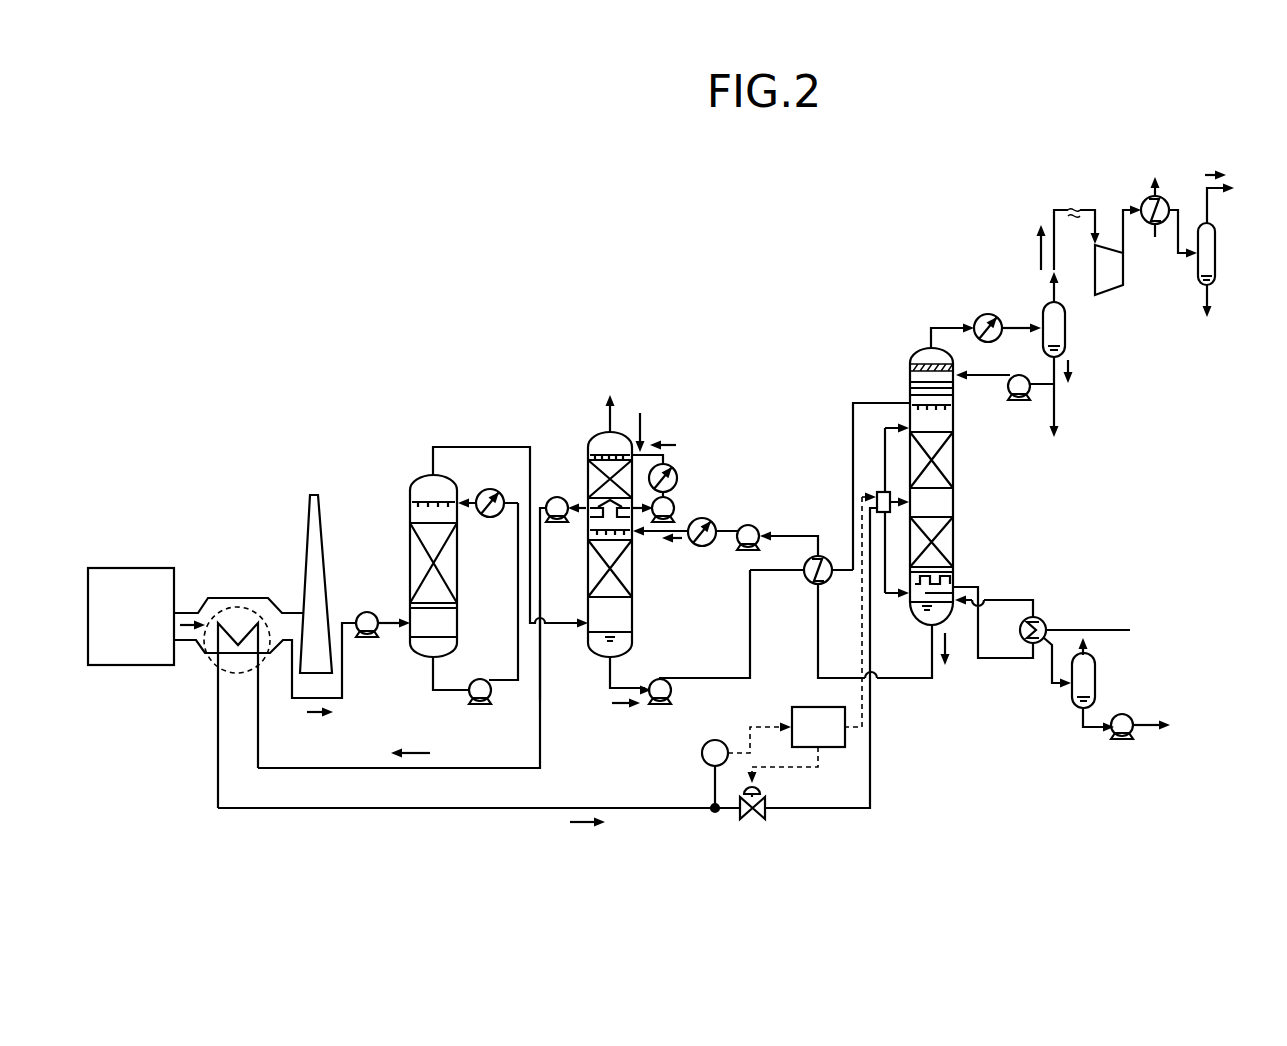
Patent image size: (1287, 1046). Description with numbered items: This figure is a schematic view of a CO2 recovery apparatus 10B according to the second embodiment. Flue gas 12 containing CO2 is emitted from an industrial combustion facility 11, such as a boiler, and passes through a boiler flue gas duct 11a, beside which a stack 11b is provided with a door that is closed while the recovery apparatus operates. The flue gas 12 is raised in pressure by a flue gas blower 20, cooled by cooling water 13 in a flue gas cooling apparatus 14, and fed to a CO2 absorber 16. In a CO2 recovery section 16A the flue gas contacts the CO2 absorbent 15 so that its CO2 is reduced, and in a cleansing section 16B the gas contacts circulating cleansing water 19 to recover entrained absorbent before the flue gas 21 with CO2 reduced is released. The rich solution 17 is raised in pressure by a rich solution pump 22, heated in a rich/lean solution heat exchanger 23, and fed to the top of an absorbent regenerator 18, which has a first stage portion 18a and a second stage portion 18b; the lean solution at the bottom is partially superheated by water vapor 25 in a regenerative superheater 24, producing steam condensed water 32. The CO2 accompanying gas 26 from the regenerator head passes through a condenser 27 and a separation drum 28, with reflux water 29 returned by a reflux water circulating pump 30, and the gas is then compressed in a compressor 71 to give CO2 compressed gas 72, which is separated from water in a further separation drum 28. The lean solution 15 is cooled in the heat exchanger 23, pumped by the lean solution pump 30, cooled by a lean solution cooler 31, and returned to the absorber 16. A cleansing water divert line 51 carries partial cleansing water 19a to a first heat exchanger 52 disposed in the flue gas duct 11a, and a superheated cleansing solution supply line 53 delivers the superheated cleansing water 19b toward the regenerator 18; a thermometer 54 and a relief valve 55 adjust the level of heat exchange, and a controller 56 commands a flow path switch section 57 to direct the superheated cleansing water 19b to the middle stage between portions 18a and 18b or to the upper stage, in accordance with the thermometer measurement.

The CO2 recovery apparatus 10B is at (652, 214).
The industrial combustion facility 11 is at (160, 568).
The boiler flue gas duct 11a is at (236, 598).
The stack 11b is at (304, 527).
The flue gas 12 is at (186, 612).
The cooling water 13 is at (488, 520).
The flue gas cooling apparatus 14 is at (410, 480).
The CO2 absorbent 15 is at (681, 537).
The CO2 absorber 16 is at (622, 424).
The CO2 recovery section 16A is at (628, 574).
The cleansing section 16B is at (592, 480).
The rich solution 17 is at (629, 708).
The absorbent regenerator 18 is at (918, 338).
The first stage portion 18a is at (948, 466).
The second stage portion 18b is at (948, 545).
The circulating cleansing water 19 is at (665, 440).
The partial cleansing water 19a is at (418, 752).
The superheated cleansing water 19b is at (583, 824).
The flue gas blower 20 is at (365, 610).
The flue gas with CO2 reduced 21 is at (606, 420).
The rich solution pump 22 is at (672, 702).
The rich/lean solution heat exchanger 23 is at (810, 583).
The regenerative superheater 24 is at (1040, 616).
The water vapor 25 is at (1104, 628).
The CO2 accompanying gas 26 is at (955, 325).
The condenser 27 is at (986, 311).
The separation drum 28 is at (1067, 330).
The reflux water 29 is at (1073, 370).
The reflux water circulating pump 30 is at (760, 522).
The lean solution cooler 31 is at (710, 546).
The steam condensed water 32 is at (1135, 715).
The cleansing water divert line 51 is at (541, 725).
The first heat exchanger 52 is at (200, 656).
The superheated cleansing solution supply line 53 is at (385, 809).
The thermometer 54 is at (722, 741).
The relief valve 55 is at (766, 790).
The controller 56 is at (800, 707).
The flow path switch section 57 is at (877, 496).
The compressor 71 is at (1117, 288).
The CO2 compressed gas 72 is at (1206, 175).